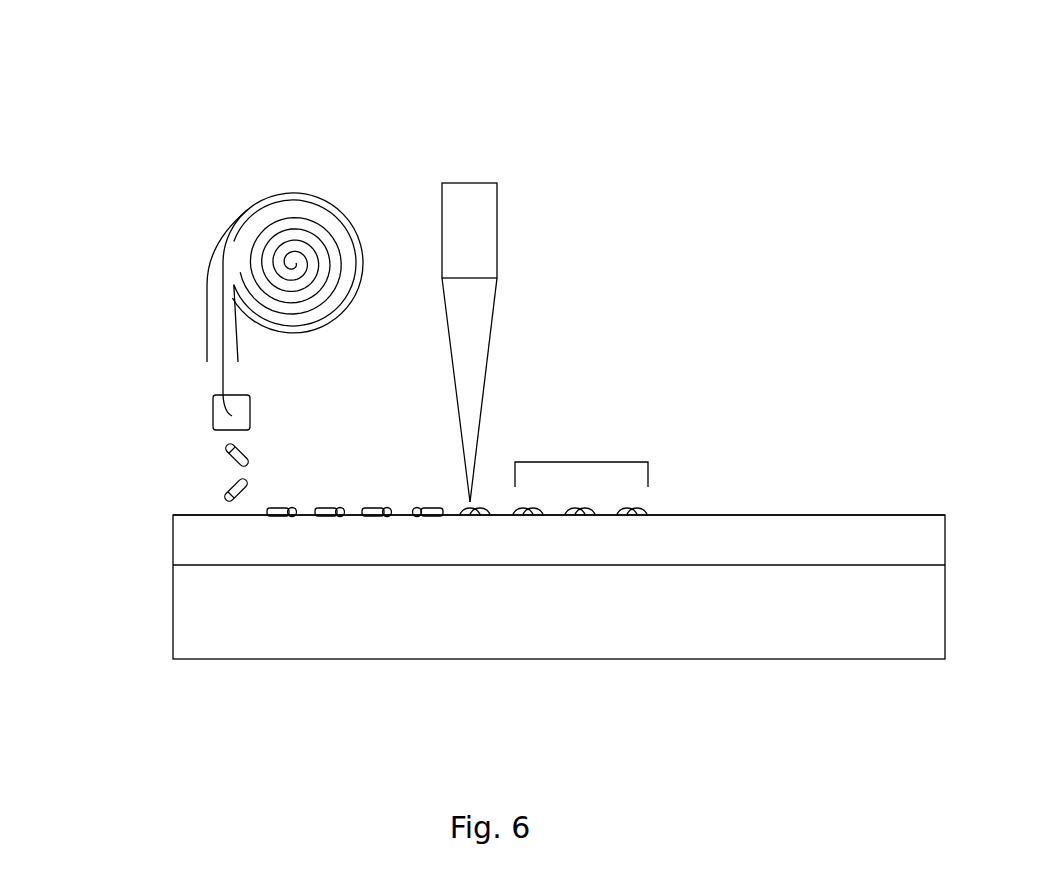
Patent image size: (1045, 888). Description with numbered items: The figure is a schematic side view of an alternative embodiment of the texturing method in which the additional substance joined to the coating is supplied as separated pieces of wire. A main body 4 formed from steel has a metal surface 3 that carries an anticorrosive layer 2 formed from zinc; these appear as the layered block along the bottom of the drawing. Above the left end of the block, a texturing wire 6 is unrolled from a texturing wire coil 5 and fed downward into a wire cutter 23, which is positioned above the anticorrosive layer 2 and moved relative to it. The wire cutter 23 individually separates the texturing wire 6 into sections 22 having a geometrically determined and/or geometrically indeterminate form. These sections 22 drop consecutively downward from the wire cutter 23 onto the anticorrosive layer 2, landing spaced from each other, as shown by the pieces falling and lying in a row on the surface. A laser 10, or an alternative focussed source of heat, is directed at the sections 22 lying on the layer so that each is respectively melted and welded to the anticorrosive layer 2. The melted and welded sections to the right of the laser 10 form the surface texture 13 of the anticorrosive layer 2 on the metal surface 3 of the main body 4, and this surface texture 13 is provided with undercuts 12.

The anticorrosive layer 2 is at (705, 542).
The metal surface 3 is at (769, 563).
The main body 4 is at (833, 617).
The texturing wire coil 5 is at (350, 235).
The texturing wire 6 is at (223, 380).
The laser 10 is at (493, 318).
The undercuts 12 is at (607, 517).
The surface texture 13 is at (581, 462).
The sections 22 is at (333, 434).
The wire cutter 23 is at (213, 421).